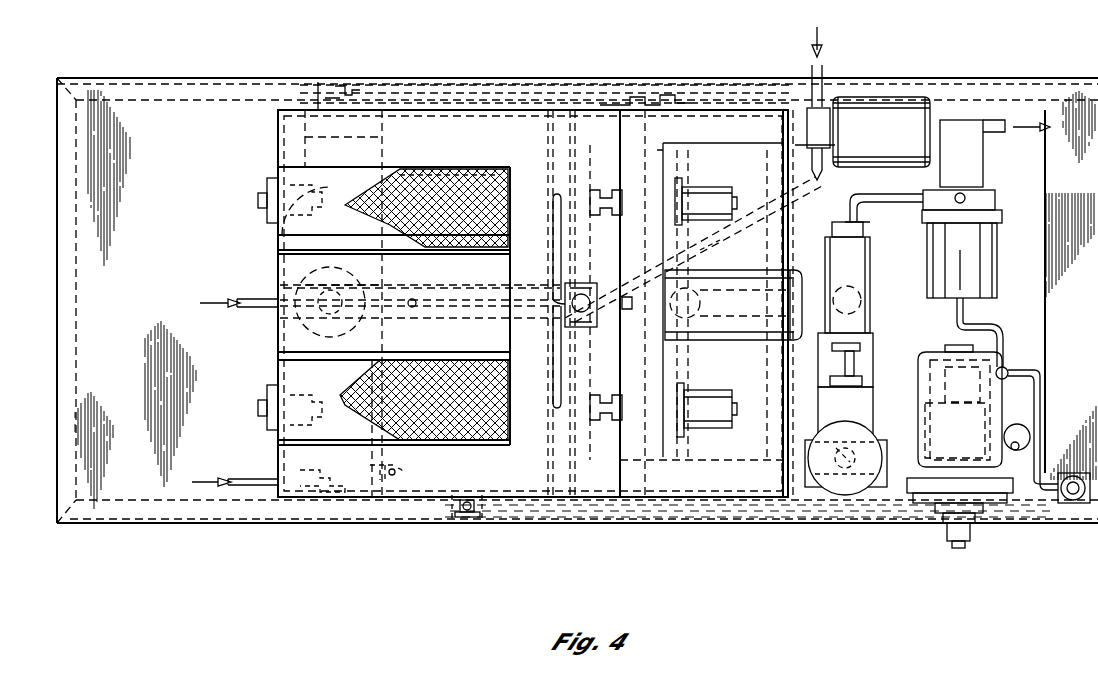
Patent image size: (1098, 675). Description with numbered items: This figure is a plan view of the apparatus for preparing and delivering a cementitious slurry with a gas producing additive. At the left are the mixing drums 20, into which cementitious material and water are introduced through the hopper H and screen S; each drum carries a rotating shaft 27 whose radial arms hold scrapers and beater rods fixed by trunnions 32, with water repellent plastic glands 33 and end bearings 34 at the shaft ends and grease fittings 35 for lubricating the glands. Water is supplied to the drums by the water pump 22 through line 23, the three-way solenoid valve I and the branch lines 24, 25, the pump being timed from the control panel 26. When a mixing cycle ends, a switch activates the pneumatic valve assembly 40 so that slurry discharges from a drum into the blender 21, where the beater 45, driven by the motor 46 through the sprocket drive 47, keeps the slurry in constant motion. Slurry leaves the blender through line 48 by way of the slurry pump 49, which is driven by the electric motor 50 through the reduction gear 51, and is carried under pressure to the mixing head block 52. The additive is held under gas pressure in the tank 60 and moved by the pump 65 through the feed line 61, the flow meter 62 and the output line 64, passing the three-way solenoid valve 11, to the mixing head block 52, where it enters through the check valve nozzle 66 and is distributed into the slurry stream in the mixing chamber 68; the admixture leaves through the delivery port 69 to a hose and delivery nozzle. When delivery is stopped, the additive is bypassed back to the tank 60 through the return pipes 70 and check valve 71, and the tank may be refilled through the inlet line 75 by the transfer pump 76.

The three-way solenoid valve 11 is at (1010, 371).
The mixing drum 20 is at (472, 120).
The blender 21 is at (730, 495).
The water pump 22 is at (806, 115).
The line 23 is at (826, 190).
The branch line 24 is at (553, 246).
The branch line 25 is at (553, 360).
The control panel 26 is at (1062, 340).
The rotating shaft 27 is at (548, 197).
The trunnion 32 is at (318, 188).
The water repellent plastic gland 33 is at (290, 225).
The end bearing 34 is at (266, 185).
The grease fitting 35 is at (260, 205).
The pneumatic valve assembly 40 is at (710, 187).
The beater 45 is at (758, 230).
The motor 46 is at (300, 150).
The sprocket drive 47 is at (645, 90).
The line 48 is at (865, 285).
The slurry pump 49 is at (868, 255).
The electric motor 50 is at (845, 495).
The reduction gear 51 is at (865, 453).
The mixing head block 52 is at (995, 200).
The tank 60 is at (400, 112).
The feed line 61 is at (1040, 404).
The flow meter 62 is at (1077, 503).
The output line 64 is at (965, 262).
The pump 65 is at (930, 368).
The check valve nozzle 66 is at (963, 198).
The mixing chamber 68 is at (963, 140).
The delivery port 69 is at (1000, 122).
The return pipe 70 is at (1000, 527).
The check valve 71 is at (465, 522).
The inlet line 75 is at (240, 480).
The transfer pump 76 is at (330, 492).
The screen S is at (430, 170).
The hopper H is at (485, 167).
The three-way solenoid valve I is at (585, 285).